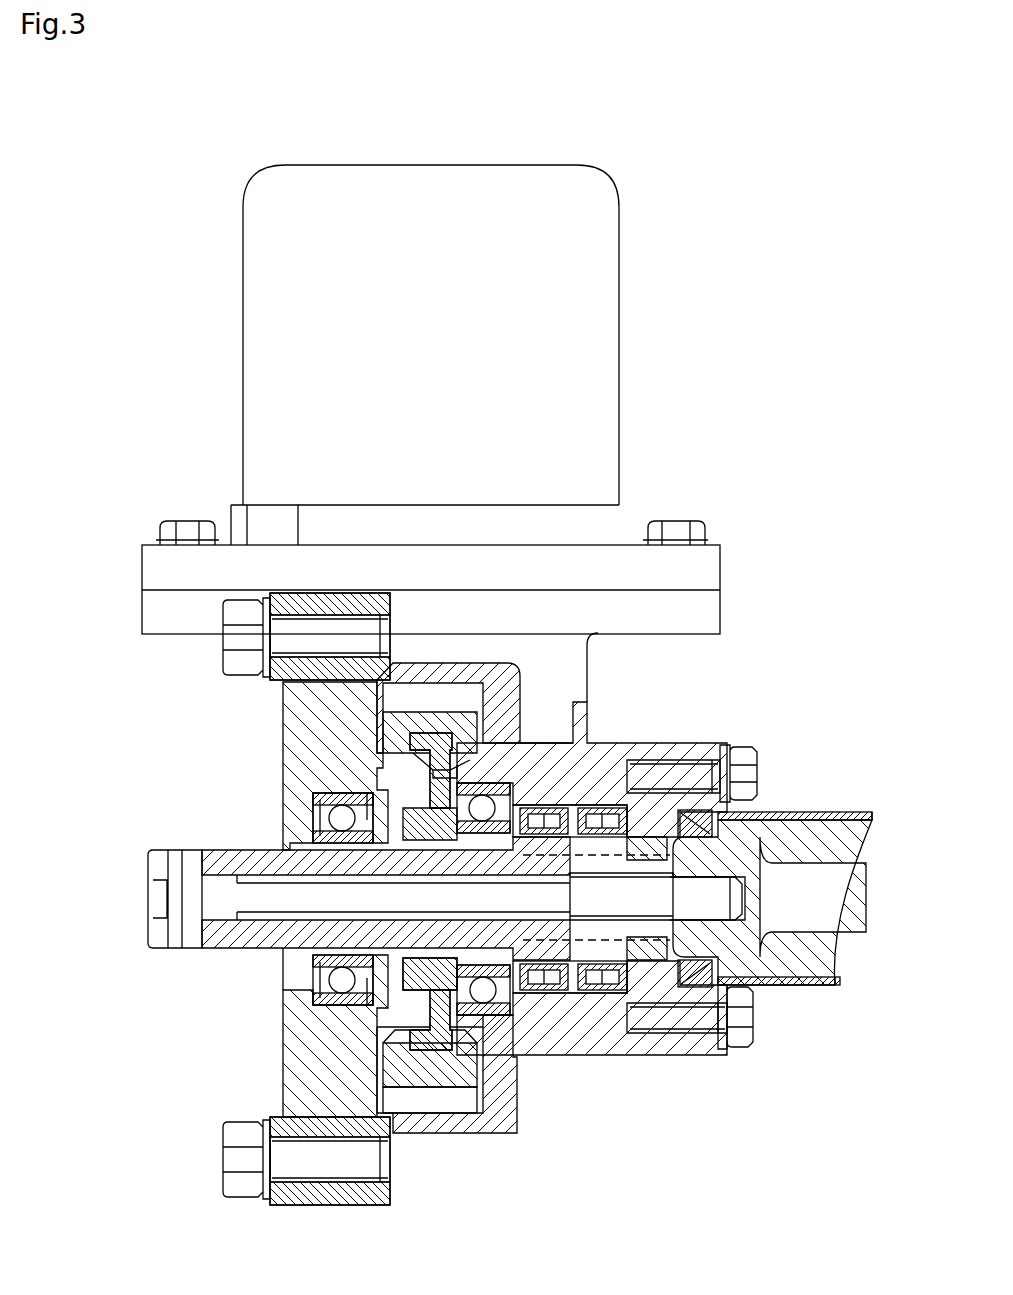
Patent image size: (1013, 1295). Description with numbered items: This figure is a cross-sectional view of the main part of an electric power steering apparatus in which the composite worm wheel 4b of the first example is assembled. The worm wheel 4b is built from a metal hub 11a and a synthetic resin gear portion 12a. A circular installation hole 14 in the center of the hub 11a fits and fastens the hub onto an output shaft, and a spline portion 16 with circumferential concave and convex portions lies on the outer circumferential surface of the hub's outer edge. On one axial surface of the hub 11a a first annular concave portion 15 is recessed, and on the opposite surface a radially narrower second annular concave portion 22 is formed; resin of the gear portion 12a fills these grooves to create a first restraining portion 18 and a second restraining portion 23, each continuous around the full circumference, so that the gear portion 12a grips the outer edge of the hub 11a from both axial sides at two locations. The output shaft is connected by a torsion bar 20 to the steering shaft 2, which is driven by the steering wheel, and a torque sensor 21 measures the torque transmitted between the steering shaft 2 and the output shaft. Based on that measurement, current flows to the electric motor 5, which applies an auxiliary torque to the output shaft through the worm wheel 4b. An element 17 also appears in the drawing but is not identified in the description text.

The steering shaft 2 is at (818, 903).
The composite worm wheel 4b is at (430, 1113).
The electric motor 5 is at (573, 250).
The hub 11a is at (437, 1005).
The gear portion 12a is at (397, 1060).
The installation hole 14 is at (355, 862).
The first annular concave portion 15 is at (430, 793).
The spline portion 16 is at (442, 730).
The cover 17 is at (403, 702).
The first restraining portion 18 is at (423, 758).
The torsion bar 20 is at (625, 898).
The torque sensor 21 is at (540, 993).
The second annular concave portion 22 is at (527, 773).
The second restraining portion 23 is at (447, 772).